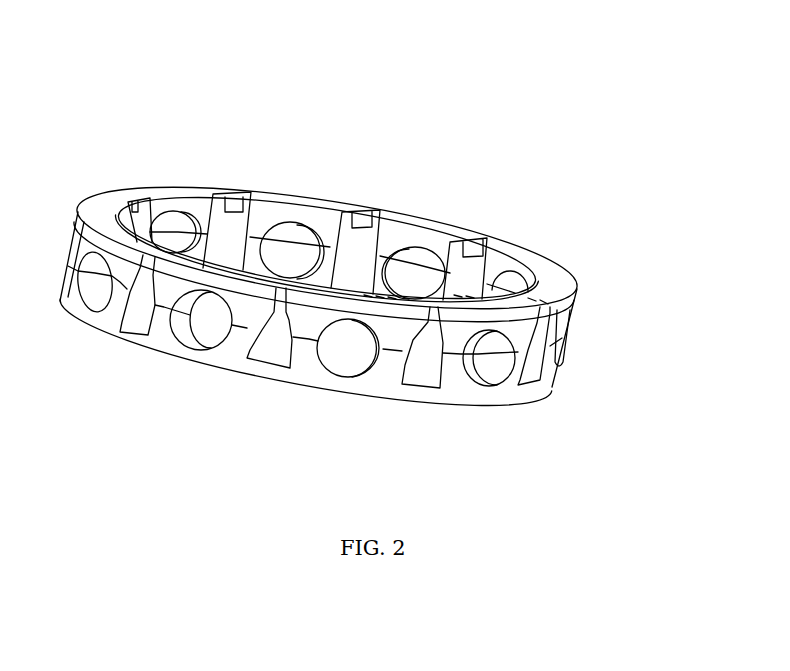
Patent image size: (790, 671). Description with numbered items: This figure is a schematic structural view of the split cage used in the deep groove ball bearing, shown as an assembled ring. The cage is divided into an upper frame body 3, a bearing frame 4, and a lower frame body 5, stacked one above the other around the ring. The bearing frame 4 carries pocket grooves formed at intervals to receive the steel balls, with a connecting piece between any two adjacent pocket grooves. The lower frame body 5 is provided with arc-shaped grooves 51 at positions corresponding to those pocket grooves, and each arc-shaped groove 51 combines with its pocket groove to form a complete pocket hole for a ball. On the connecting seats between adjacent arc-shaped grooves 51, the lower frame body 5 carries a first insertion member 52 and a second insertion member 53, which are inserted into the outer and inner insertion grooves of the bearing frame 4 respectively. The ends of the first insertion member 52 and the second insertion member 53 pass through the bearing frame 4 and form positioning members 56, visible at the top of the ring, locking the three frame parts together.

The upper frame body 3 is at (310, 205).
The bearing frame 4 is at (388, 247).
The lower frame body 5 is at (398, 297).
The arc-shaped groove 51 is at (380, 293).
The first insertion member 52 is at (528, 362).
The second insertion member 53 is at (462, 297).
The positioning member 56 is at (234, 190).